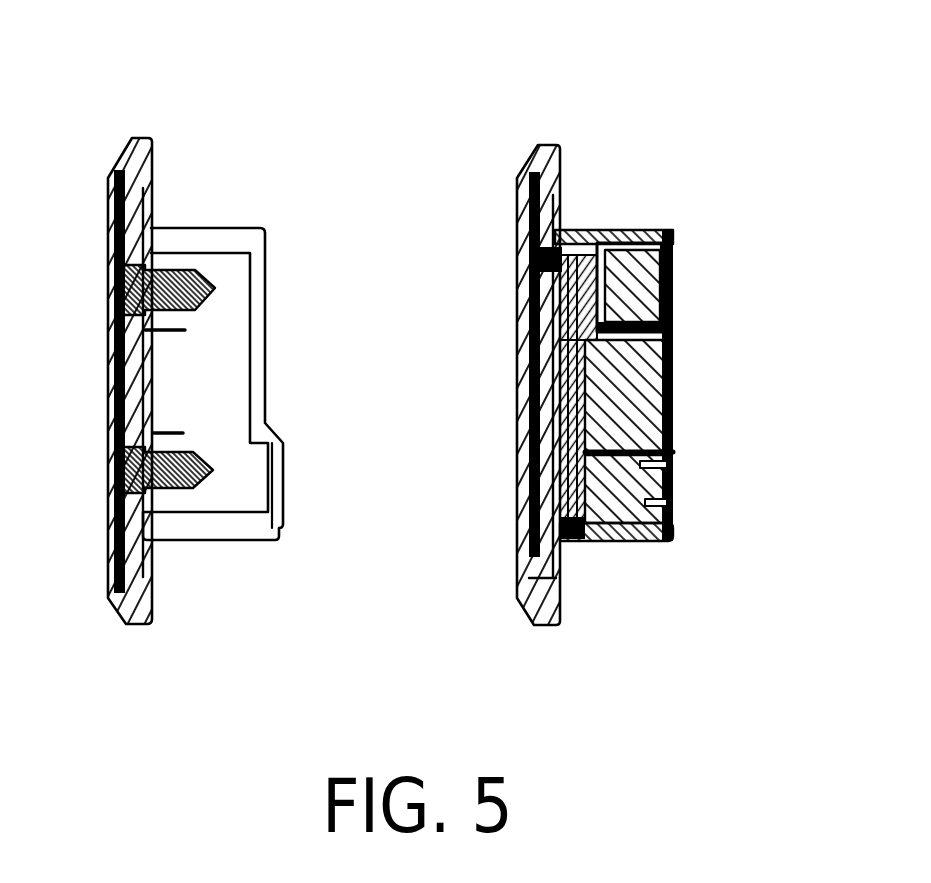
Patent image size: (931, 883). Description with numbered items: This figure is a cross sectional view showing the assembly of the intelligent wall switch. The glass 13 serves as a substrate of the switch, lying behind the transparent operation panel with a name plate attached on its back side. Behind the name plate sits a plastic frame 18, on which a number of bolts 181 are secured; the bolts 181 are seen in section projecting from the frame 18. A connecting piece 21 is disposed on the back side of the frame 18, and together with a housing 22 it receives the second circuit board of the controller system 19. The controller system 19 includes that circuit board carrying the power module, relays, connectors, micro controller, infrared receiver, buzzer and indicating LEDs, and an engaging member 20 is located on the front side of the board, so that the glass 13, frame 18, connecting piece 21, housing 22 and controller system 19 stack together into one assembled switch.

The glass 13 is at (118, 185).
The plastic frame 18 is at (140, 152).
The bolts 181 is at (177, 490).
The controller system 19 is at (640, 368).
The engaging member 20 is at (615, 542).
The connecting piece 21 is at (152, 195).
The housing 22 is at (668, 232).